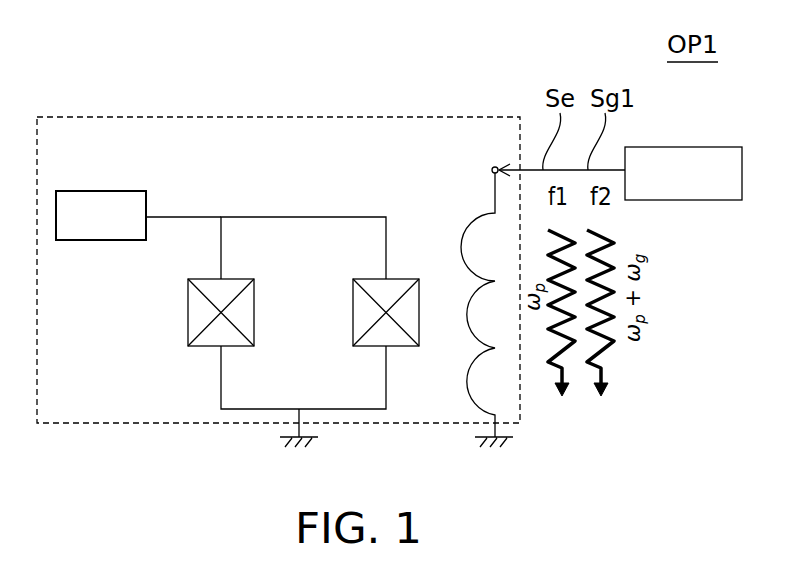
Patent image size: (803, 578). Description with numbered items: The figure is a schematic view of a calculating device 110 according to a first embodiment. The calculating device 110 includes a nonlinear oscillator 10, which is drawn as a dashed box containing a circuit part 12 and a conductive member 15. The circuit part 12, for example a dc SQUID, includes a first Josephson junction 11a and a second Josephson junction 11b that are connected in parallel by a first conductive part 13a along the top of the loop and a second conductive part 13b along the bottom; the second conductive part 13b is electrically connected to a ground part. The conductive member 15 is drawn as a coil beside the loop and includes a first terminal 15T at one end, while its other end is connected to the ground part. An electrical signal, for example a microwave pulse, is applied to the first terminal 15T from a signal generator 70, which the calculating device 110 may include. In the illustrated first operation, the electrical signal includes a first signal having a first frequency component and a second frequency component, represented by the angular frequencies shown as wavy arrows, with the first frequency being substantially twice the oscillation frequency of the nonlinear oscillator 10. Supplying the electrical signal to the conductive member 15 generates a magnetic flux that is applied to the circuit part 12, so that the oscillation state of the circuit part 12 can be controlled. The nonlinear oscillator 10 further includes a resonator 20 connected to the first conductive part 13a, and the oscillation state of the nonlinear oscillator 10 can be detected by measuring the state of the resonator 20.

The calculating device 110 is at (128, 104).
The nonlinear oscillator 10 is at (347, 117).
The resonator 20 is at (92, 191).
The circuit part 12 is at (330, 216).
The first conductive part 13a is at (284, 216).
The second conductive part 13b is at (364, 410).
The first Josephson junction 11a is at (203, 347).
The second Josephson junction 11b is at (404, 347).
The conductive member 15 is at (478, 215).
The first terminal 15T is at (491, 170).
The signal generator 70 is at (714, 147).